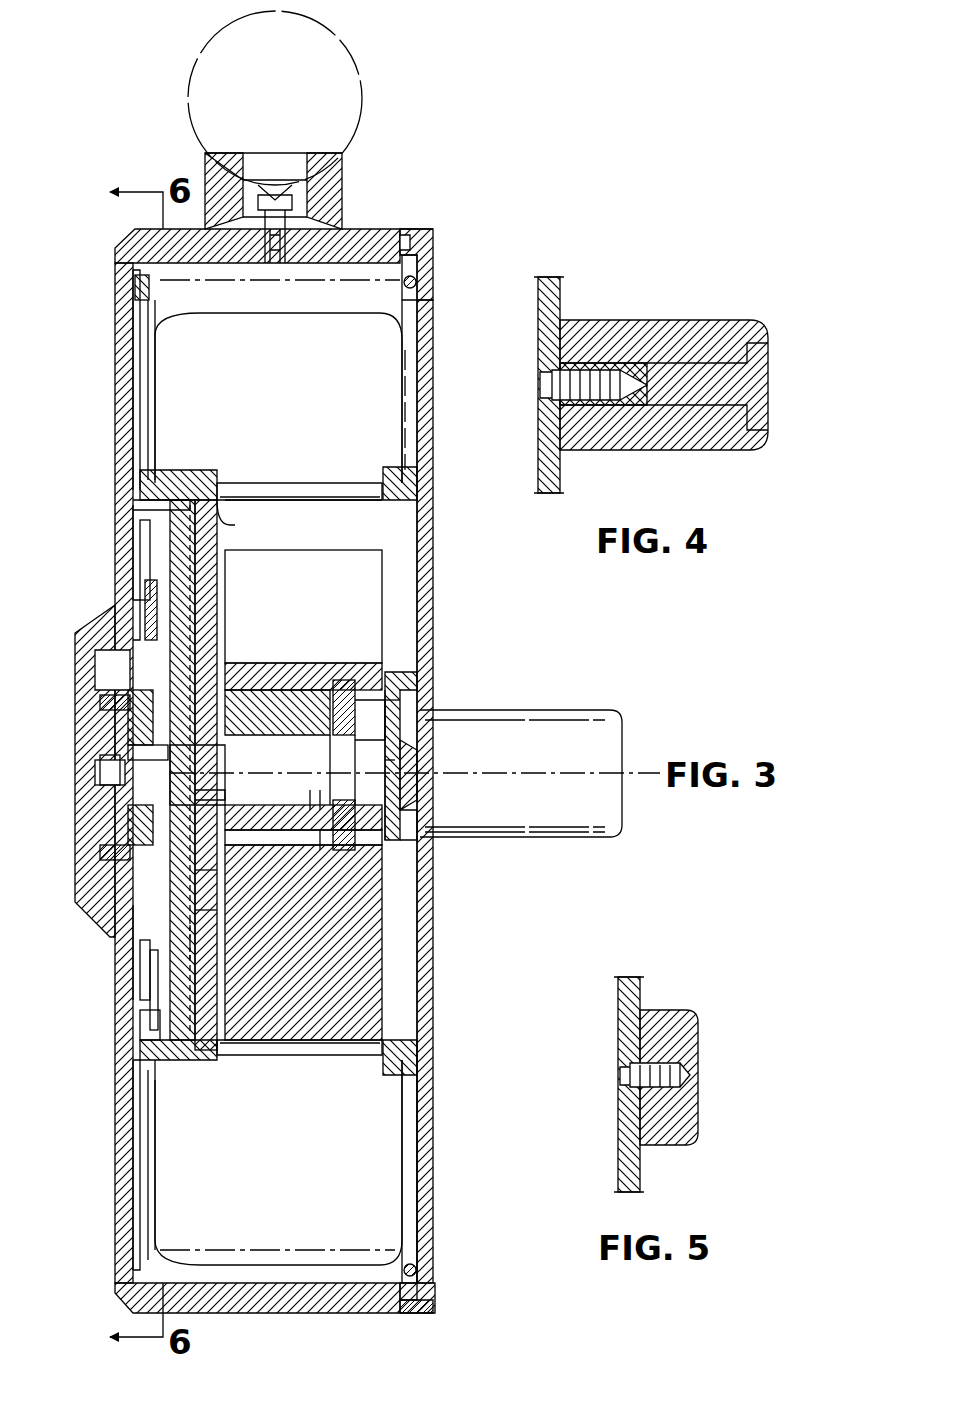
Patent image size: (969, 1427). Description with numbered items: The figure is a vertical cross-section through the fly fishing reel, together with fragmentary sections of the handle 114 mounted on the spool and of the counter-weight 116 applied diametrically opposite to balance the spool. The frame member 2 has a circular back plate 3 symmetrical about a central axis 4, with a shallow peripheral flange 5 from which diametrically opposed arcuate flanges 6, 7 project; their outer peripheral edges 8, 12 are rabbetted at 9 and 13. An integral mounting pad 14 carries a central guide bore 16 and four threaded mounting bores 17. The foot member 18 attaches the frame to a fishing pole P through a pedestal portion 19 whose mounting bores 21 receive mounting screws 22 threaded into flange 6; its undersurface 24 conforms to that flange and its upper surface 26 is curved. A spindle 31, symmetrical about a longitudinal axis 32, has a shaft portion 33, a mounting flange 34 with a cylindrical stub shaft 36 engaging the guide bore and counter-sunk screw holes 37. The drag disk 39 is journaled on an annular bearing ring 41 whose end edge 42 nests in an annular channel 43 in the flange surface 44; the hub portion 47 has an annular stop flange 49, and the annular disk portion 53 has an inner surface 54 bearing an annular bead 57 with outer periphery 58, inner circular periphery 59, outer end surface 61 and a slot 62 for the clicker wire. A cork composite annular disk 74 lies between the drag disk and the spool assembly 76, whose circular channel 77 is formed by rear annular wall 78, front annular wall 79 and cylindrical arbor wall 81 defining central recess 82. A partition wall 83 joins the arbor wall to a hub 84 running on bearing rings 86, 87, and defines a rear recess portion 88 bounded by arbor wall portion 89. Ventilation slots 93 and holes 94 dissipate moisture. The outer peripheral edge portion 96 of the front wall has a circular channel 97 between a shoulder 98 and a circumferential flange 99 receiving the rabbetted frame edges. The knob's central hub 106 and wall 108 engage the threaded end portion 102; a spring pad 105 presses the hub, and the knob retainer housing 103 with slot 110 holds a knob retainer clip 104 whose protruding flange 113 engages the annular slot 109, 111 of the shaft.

In FIG. 3, the frame member 2 is at (116, 465).
In FIG. 3, the circular back plate 3 is at (136, 535).
In FIG. 3, the central axis 4 is at (104, 776).
In FIG. 3, the peripheral flange 5 is at (136, 565).
In FIG. 3, the arcuate flange 6 is at (358, 250).
In FIG. 3, the arcuate flange 7 is at (310, 1298).
In FIG. 3, the outer peripheral edge 8 is at (436, 268).
In FIG. 3, the rabbet 9 is at (430, 236).
In FIG. 3, the outer peripheral edge 12 is at (430, 1287).
In FIG. 3, the rabbet 13 is at (420, 1314).
In FIG. 3, the mounting pad 14 is at (108, 866).
In FIG. 3, the guide bore 16 is at (118, 775).
In FIG. 3, the threaded mounting bores 17 is at (98, 704).
In FIG. 3, the foot member 18 is at (352, 186).
In FIG. 3, the pedestal portion 19 is at (330, 205).
In FIG. 3, the mounting bores 21 is at (250, 186).
In FIG. 3, the mounting screws 22 is at (300, 180).
In FIG. 3, the undersurface 24 is at (322, 262).
In FIG. 3, the upper surface 26 is at (228, 160).
In FIG. 3, the spindle 31 is at (150, 778).
In FIG. 3, the longitudinal axis 32 is at (520, 780).
In FIG. 3, the shaft portion 33 is at (300, 802).
In FIG. 3, the mounting flange 34 is at (113, 682).
In FIG. 3, the cylindrical stub shaft 36 is at (120, 746).
In FIG. 3, the counter-sunk screw holes 37 is at (122, 812).
In FIG. 3, the drag disk 39 is at (225, 600).
In FIG. 3, the annular bearing ring 41 is at (205, 882).
In FIG. 3, the end edge 42 is at (255, 790).
In FIG. 3, the annular channel 43 is at (136, 742).
In FIG. 3, the surface 44 is at (200, 640).
In FIG. 3, the hub portion 47 is at (205, 856).
In FIG. 3, the annular stop flange 49 is at (222, 832).
In FIG. 3, the annular disk portion 53 is at (200, 942).
In FIG. 3, the inner surface 54 is at (205, 912).
In FIG. 3, the annular bead 57 is at (165, 578).
In FIG. 3, the outer periphery 58 is at (150, 990).
In FIG. 3, the inner circular periphery 59 is at (125, 915).
In FIG. 3, the outer end surface 61 is at (125, 600).
In FIG. 3, the slot 62 is at (140, 955).
In FIG. 3, the cork composite annular disk 74 is at (210, 530).
In FIG. 3, the spool assembly 76 is at (382, 515).
In FIG. 3, the circular channel 77 is at (360, 377).
In FIG. 3, the rear annular wall 78 is at (140, 283).
In FIG. 3, the front annular wall 79 is at (425, 292).
In FIG. 4, the front annular wall 79 is at (560, 482).
In FIG. 5, the front annular wall 79 is at (640, 990).
In FIG. 3, the cylindrical arbor wall 81 is at (238, 490).
In FIG. 3, the central recess 82 is at (388, 926).
In FIG. 3, the partition wall 83 is at (205, 555).
In FIG. 3, the hub 84 is at (322, 856).
In FIG. 3, the bearing ring 86 is at (235, 732).
In FIG. 3, the bearing ring 87 is at (316, 814).
In FIG. 3, the rear recess portion 88 is at (130, 520).
In FIG. 3, the arbor wall portion 89 is at (160, 480).
In FIG. 3, the ventilation slots 93 is at (322, 492).
In FIG. 3, the holes 94 is at (140, 340).
In FIG. 3, the outer peripheral edge portion 96 is at (440, 247).
In FIG. 3, the circular channel 97 is at (425, 280).
In FIG. 3, the shoulder 98 is at (406, 244).
In FIG. 3, the circumferential flange 99 is at (432, 1305).
In FIG. 3, the threaded end portion 102 is at (352, 772).
In FIG. 3, the knob retainer housing 103 is at (408, 766).
In FIG. 3, the knob retainer clip 104 is at (402, 702).
In FIG. 3, the spring pad 105 is at (346, 682).
In FIG. 3, the central hub 106 is at (276, 668).
In FIG. 3, the wall 108 is at (388, 708).
In FIG. 3, the annular slot 109 is at (345, 746).
In FIG. 3, the slot 110 is at (404, 812).
In FIG. 3, the annular slot 111 is at (431, 738).
In FIG. 3, the protruding flange 113 is at (400, 674).
In FIG. 4, the handle 114 is at (638, 318).
In FIG. 5, the counter-weight 116 is at (702, 1020).
In FIG. 3, the fishing pole P is at (360, 95).